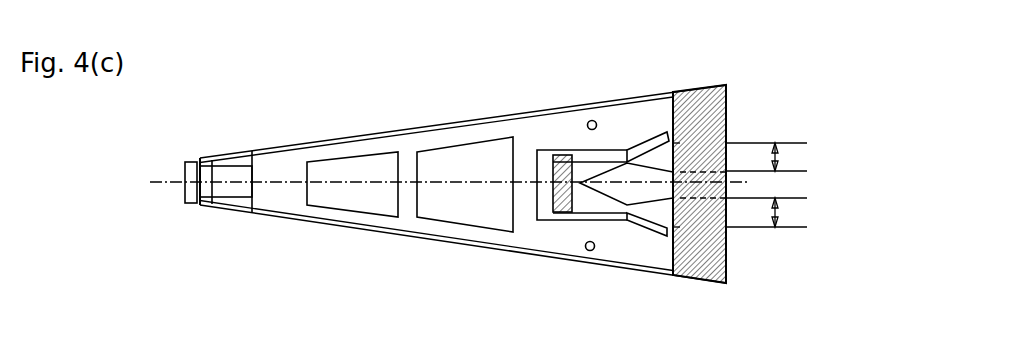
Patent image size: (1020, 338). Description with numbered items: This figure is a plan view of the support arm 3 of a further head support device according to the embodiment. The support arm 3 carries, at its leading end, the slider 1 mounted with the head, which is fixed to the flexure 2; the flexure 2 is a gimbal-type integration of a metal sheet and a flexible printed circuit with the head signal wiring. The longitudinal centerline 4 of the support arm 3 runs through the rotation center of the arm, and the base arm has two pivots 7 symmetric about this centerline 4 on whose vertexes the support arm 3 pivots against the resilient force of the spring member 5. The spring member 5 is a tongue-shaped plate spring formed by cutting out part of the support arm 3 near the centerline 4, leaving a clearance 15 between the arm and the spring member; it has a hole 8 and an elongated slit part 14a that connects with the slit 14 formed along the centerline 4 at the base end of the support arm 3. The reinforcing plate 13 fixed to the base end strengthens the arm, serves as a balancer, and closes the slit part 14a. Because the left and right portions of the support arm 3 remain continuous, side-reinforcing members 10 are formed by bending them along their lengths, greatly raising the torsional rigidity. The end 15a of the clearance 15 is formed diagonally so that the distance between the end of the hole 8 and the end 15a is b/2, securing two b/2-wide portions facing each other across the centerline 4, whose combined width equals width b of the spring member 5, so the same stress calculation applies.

The slider 1 is at (236, 177).
The flexure 2 is at (194, 203).
The support arm 3 is at (410, 162).
The longitudinal centerline 4 is at (527, 182).
The spring member 5 is at (580, 170).
The pivots 7 is at (592, 120).
The hole 8 is at (632, 196).
The side-reinforcing members 10 is at (343, 140).
The reinforcing plate 13 is at (693, 110).
The slit 14 is at (705, 175).
The slit part 14a is at (681, 168).
The clearance 15 is at (604, 152).
The end of clearance 15a is at (657, 133).